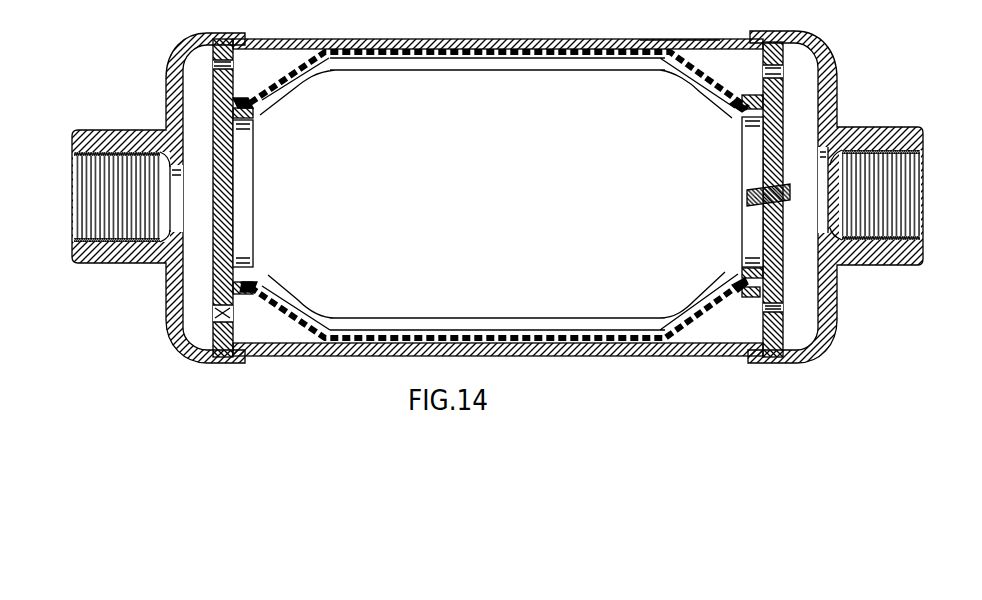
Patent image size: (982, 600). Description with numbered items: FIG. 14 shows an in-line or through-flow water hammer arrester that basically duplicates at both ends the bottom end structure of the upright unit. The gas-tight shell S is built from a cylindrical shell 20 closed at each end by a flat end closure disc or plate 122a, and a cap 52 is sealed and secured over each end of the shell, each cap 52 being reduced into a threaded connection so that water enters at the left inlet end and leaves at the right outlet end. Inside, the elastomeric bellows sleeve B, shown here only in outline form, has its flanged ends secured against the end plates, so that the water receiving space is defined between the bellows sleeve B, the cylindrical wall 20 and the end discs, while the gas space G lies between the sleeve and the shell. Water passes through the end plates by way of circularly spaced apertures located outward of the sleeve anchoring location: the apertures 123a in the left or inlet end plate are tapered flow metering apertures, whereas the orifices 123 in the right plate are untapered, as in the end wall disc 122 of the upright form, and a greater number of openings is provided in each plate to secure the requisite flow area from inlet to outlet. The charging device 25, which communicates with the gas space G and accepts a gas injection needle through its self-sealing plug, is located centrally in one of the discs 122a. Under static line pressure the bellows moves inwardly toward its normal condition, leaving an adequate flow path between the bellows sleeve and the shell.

The cap 52 is at (161, 101).
The cylindrical shell 20 is at (628, 40).
The shell S is at (676, 38).
The tapered flow metering apertures 123a is at (229, 65).
The apertures 123 is at (766, 72).
The end closure disc 122a is at (240, 183).
The end wall disc 122 is at (756, 157).
The charging device 25 is at (787, 189).
The bellows sleeve B is at (674, 61).
The gas space G is at (497, 157).